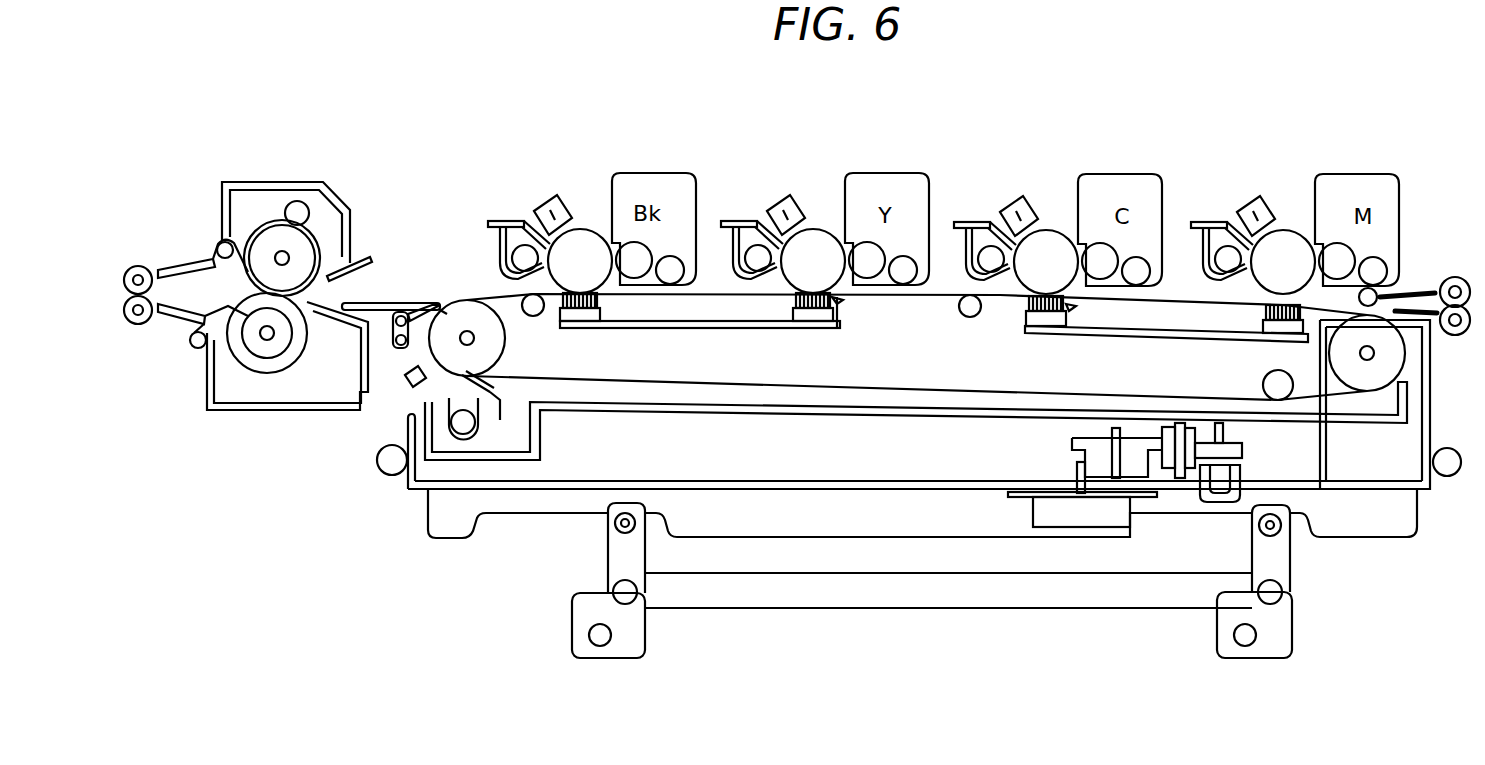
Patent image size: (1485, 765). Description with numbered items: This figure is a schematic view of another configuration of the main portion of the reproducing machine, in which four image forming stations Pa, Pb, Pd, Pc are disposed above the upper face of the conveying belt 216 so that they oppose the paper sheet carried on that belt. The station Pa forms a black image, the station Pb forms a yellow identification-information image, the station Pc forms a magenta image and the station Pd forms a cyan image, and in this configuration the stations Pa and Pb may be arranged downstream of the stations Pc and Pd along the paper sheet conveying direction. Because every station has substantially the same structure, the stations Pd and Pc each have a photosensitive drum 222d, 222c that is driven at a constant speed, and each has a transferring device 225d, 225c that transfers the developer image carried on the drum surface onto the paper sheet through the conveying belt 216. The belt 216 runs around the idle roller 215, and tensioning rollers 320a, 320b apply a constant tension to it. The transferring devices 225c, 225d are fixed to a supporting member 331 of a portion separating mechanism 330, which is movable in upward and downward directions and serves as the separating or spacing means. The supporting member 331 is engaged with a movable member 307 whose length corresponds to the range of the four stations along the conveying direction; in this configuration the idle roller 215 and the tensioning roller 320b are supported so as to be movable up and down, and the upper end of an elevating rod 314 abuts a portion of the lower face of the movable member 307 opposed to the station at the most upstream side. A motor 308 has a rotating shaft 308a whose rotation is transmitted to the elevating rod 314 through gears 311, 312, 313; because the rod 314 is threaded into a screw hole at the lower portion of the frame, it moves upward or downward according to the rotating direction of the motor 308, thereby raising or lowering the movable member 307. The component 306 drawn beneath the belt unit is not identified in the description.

The image forming station Pa is at (658, 160).
The image forming station Pb is at (883, 160).
The image forming station Pd is at (1120, 160).
The image forming station Pc is at (1355, 160).
The photosensitive drum 222d is at (1048, 228).
The photosensitive drum 222c is at (1293, 232).
The conveying belt 216 is at (905, 297).
The idle roller 215 is at (1397, 363).
The tensioning roller 320b is at (973, 320).
The tensioning roller 320a is at (1263, 385).
The transferring device 225d is at (1050, 330).
The transferring device 225c is at (1277, 336).
The movable member 307 is at (690, 413).
The lower frame 306 is at (773, 493).
The portion separating mechanism 330 is at (960, 448).
The gear 311 is at (1072, 447).
The gear 312 is at (1167, 430).
The supporting member 331 is at (1182, 340).
The elevating rod 314 is at (1223, 437).
The gear 313 is at (1243, 459).
The rotating shaft 308a is at (1073, 472).
The motor 308 is at (1082, 527).